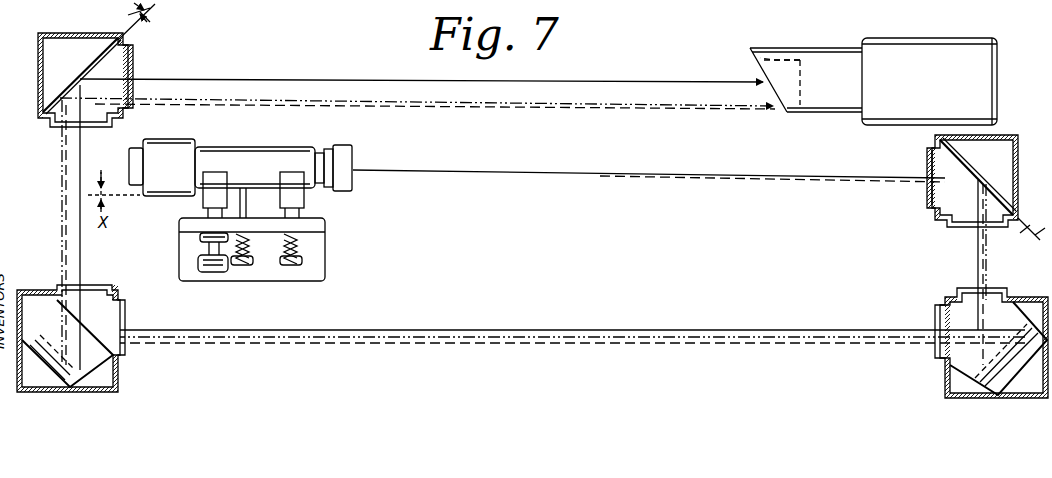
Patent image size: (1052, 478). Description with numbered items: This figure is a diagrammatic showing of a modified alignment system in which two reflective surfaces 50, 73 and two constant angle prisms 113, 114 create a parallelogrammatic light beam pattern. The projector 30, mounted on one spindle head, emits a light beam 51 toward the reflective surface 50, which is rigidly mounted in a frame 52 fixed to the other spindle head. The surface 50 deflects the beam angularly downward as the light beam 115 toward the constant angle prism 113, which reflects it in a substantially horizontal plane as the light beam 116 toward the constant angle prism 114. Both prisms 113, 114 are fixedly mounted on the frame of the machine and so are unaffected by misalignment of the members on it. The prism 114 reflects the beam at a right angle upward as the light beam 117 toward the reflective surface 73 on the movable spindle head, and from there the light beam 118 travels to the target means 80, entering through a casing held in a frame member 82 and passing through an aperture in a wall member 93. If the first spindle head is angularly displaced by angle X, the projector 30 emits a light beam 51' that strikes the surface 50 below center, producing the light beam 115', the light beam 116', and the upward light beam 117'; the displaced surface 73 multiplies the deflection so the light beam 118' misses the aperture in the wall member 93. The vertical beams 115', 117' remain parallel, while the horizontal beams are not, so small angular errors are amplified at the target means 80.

The reflective surface 73 is at (125, 60).
The frame member 82 is at (815, 48).
The target means 80 is at (968, 52).
The wall member 93 is at (758, 60).
The frame 52 is at (1008, 135).
The reflective surface 50 is at (955, 162).
The projector 30 is at (275, 148).
The light beam 118 is at (421, 64).
The light beam 118' is at (435, 119).
The light beam 117 is at (110, 227).
The light beam 117' is at (37, 232).
The constant angle prism 114 is at (52, 312).
The light beam 51 is at (649, 157).
The light beam 51' is at (772, 201).
The light beam 115 is at (941, 255).
The light beam 115' is at (1010, 242).
The constant angle prism 113 is at (962, 318).
The light beam 116 is at (572, 311).
The light beam 116' is at (572, 367).